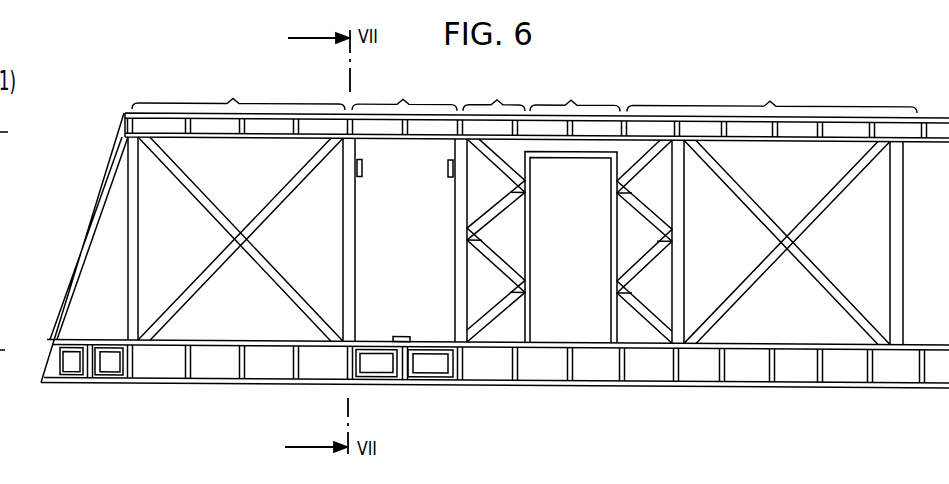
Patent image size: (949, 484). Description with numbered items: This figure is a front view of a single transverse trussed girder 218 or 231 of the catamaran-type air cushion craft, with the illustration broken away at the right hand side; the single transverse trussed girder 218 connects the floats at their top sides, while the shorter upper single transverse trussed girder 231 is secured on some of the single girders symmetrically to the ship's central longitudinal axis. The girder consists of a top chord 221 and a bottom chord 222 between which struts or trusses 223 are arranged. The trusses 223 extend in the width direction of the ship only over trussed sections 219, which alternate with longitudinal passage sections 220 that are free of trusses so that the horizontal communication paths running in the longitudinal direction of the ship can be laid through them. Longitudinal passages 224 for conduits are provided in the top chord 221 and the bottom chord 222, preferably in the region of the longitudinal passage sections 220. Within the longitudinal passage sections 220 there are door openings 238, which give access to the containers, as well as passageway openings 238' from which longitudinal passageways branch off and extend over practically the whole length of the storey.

The single transverse trussed girder 218 is at (817, 86).
The upper single transverse trussed girder 231 is at (515, 189).
The trussed section 219 is at (524, 90).
The longitudinal passage section 220 is at (486, 89).
The top chord 221 is at (233, 138).
The bottom chord 222 is at (200, 383).
The truss 223 is at (195, 193).
The longitudinal passage 224 is at (113, 367).
The door opening 238 is at (571, 247).
The passageway opening 238' is at (405, 203).